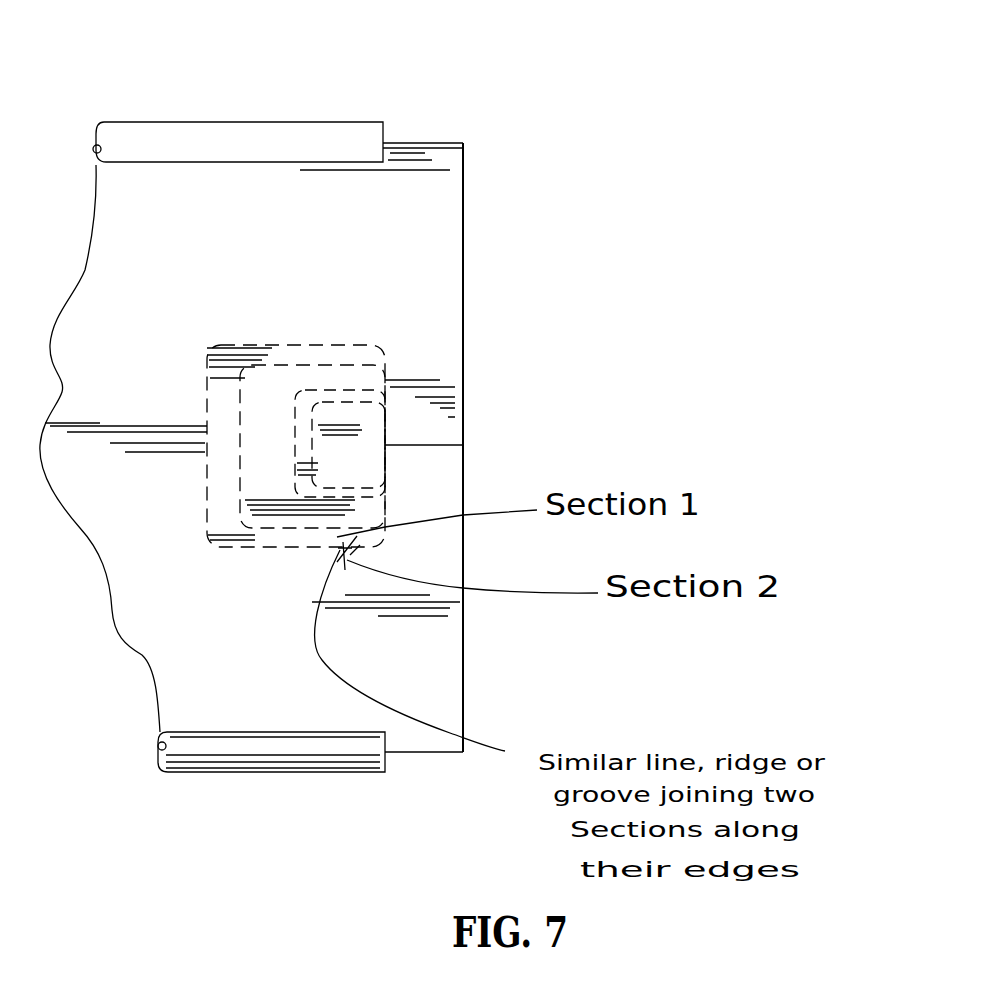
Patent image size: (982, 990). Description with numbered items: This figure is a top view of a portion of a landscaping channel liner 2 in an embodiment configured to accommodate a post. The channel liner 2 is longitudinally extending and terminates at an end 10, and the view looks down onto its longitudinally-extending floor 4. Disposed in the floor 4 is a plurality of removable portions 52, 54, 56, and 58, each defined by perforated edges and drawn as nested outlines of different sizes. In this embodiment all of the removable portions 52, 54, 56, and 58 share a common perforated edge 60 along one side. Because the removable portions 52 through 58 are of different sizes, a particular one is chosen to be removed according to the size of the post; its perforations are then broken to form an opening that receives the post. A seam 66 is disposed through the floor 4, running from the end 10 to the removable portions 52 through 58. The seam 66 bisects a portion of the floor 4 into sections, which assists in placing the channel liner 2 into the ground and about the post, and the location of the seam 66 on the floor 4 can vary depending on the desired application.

The landscaping channel liner 2 is at (418, 70).
The floor 4 is at (195, 270).
The end 10 is at (479, 468).
The removable portion 52 is at (357, 415).
The removable portion 54 is at (305, 415).
The removable portion 56 is at (275, 385).
The removable portion 58 is at (228, 380).
The common perforated edge 60 is at (385, 427).
The seam 66 is at (422, 440).